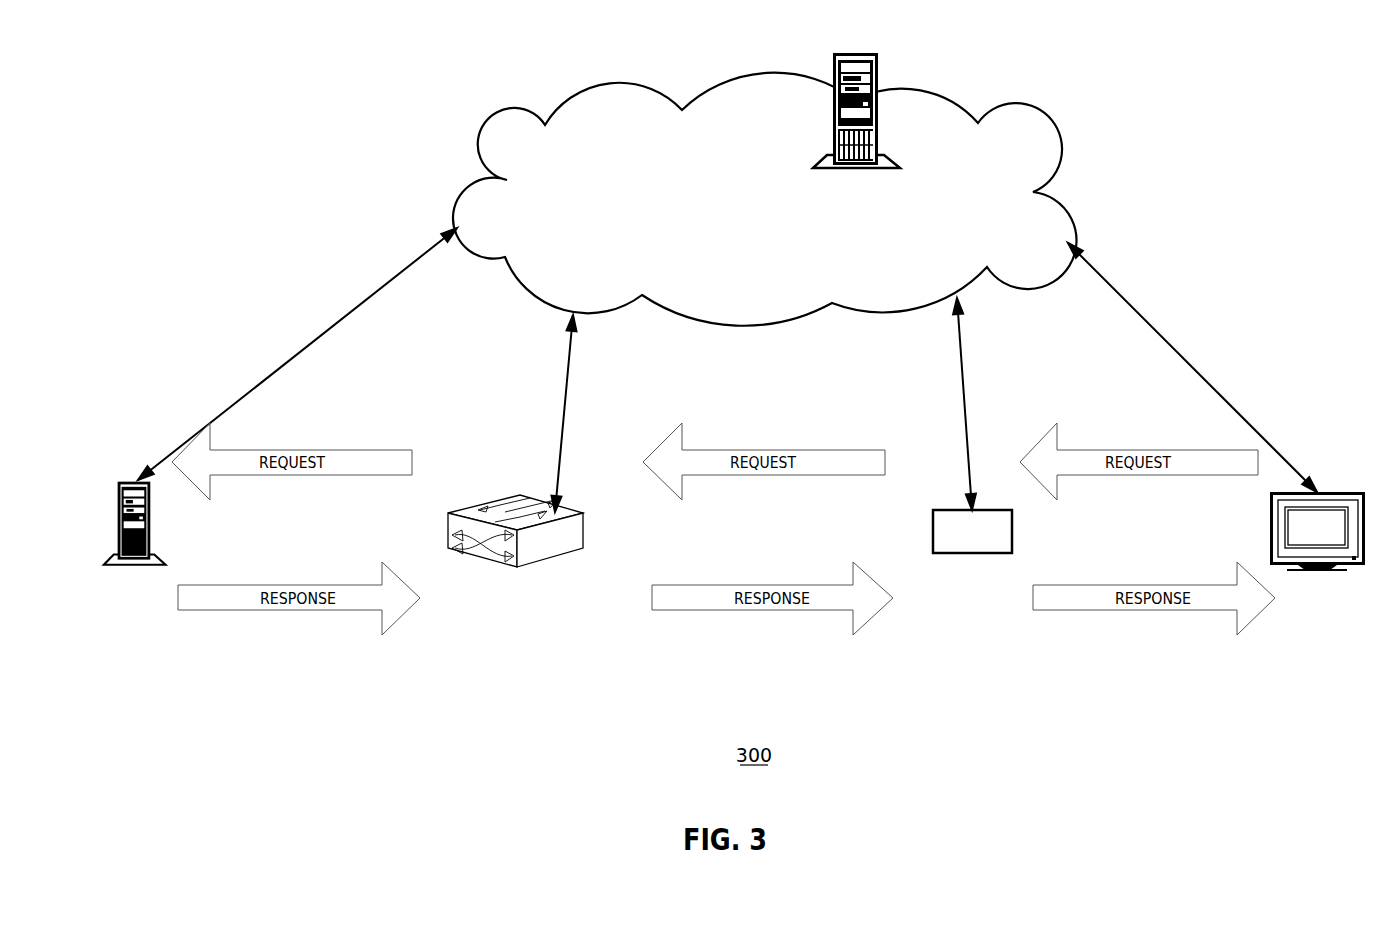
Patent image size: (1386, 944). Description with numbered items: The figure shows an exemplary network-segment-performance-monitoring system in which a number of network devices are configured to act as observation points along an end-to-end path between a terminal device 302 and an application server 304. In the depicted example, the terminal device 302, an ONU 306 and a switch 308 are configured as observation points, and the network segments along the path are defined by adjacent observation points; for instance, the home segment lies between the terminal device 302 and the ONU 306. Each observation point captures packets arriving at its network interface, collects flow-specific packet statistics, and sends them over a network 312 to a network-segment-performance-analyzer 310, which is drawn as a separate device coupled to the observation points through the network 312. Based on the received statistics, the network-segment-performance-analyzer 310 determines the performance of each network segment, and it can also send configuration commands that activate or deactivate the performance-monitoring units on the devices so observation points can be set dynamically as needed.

The terminal device 302 is at (1313, 570).
The application server 304 is at (133, 565).
The ONU 306 is at (968, 553).
The switch 308 is at (502, 508).
The network-segment-performance-analyzer 310 is at (878, 85).
The network 312 is at (822, 211).